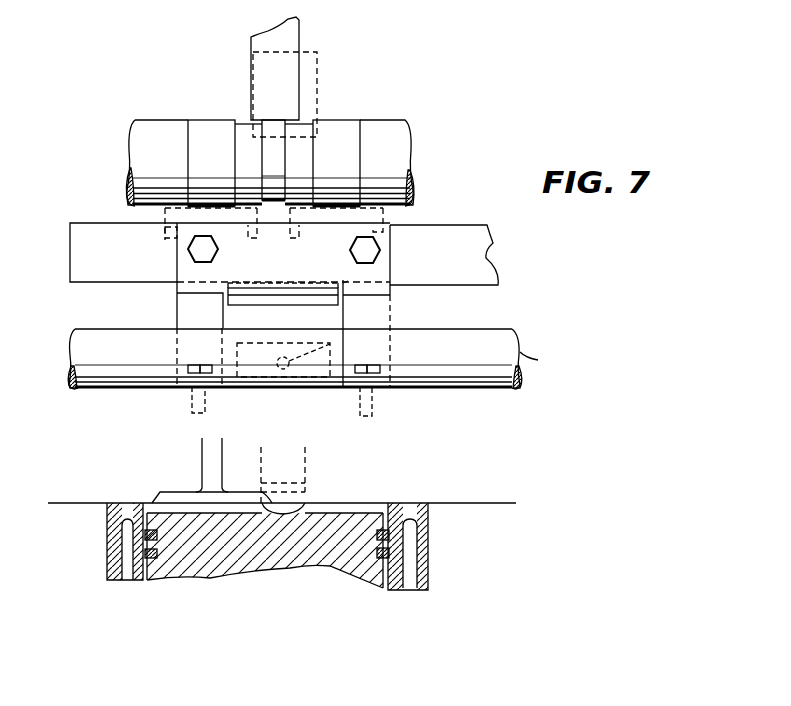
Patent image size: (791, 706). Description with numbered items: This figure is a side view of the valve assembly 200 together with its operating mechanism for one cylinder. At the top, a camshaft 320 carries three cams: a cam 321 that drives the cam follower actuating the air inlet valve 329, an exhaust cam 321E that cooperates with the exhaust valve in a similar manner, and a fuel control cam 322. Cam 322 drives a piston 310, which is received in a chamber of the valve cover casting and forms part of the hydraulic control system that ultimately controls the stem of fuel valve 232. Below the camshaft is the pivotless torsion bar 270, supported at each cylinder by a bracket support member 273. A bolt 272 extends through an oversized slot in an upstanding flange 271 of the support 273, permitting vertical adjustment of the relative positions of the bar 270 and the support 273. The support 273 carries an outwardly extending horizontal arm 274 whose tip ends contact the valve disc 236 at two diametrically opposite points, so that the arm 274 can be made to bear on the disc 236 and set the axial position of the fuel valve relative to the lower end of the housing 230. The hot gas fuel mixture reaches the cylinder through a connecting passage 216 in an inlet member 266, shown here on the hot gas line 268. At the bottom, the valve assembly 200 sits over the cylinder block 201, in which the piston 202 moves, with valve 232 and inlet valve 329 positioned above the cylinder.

The piston 310 is at (265, 73).
The fuel control cam 322 is at (264, 119).
The cam 321 is at (203, 124).
The exhaust cam 321E is at (340, 129).
The camshaft 320 is at (300, 186).
The torsion bar 270 is at (132, 256).
The upstanding flange 271 is at (290, 274).
The bolt 272 is at (197, 250).
The bracket support member 273 is at (188, 315).
The valve disc 236 is at (303, 302).
The horizontal arm 274 is at (343, 290).
The hot gas line 268 is at (460, 368).
The inlet member 266 is at (256, 347).
The connecting passage 216 is at (332, 345).
The cylinder block 201 is at (107, 503).
The piston 202 is at (225, 566).
The valve assembly 200 is at (282, 513).
The valve 232 is at (292, 498).
The inlet valve 329 is at (186, 494).
The housing 230 is at (292, 462).